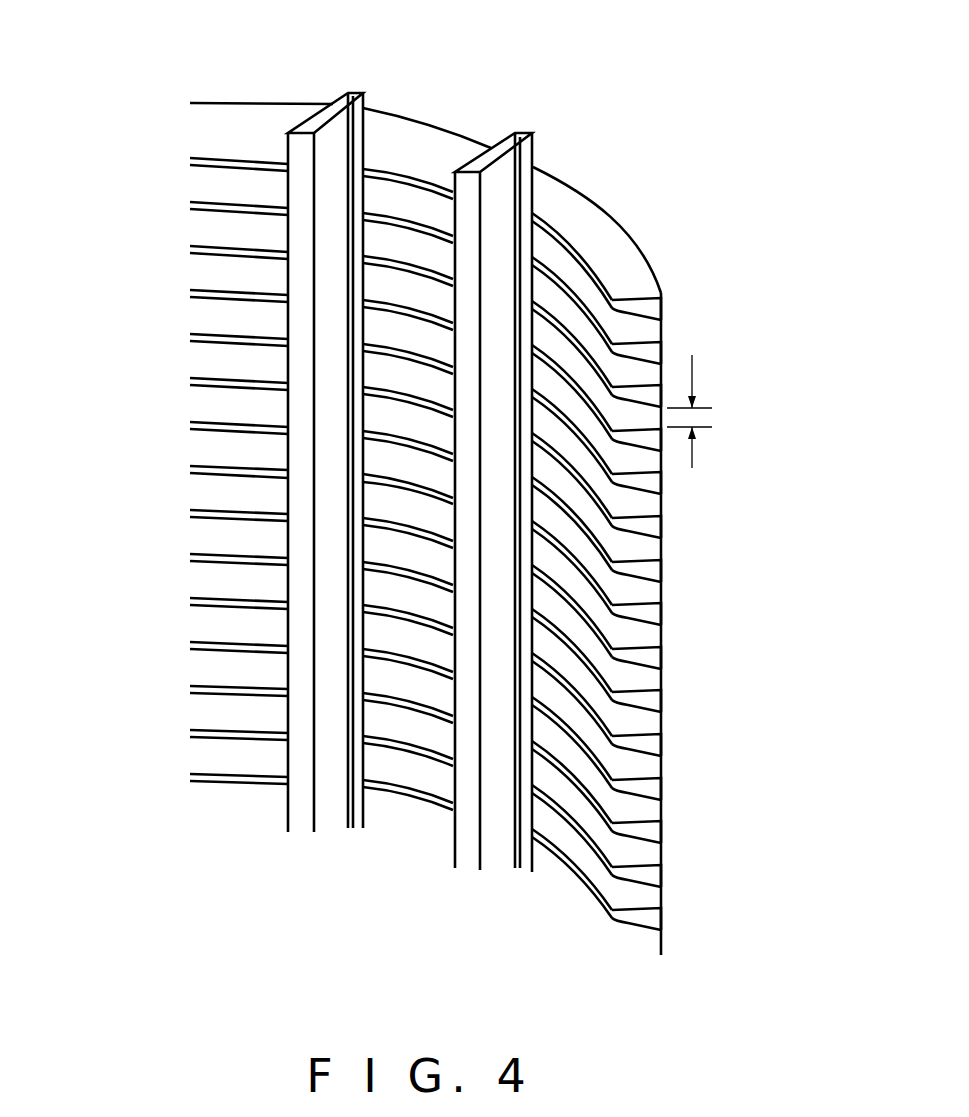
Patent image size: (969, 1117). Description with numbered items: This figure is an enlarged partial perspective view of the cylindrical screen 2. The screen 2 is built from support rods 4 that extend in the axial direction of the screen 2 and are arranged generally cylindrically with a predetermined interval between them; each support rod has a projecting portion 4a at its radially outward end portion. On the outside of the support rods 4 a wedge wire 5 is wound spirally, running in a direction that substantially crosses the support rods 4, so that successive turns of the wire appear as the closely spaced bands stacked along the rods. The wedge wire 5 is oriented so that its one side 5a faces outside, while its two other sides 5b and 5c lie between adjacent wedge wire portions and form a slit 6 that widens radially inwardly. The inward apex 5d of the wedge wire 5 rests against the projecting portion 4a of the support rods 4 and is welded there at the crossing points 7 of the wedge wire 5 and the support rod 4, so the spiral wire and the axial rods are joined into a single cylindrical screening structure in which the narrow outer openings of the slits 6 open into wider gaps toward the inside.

The cylindrical screen 2 is at (690, 152).
The support rods 4 is at (322, 792).
The projecting portion 4a is at (333, 105).
The wedge wire 5 is at (653, 572).
The one side of the wedge wire 5a is at (662, 660).
The side of the wedge wire 5b is at (638, 675).
The side of the wedge wire 5c is at (638, 642).
The inward apex 5d is at (602, 655).
The slit 6 is at (692, 420).
The crossing points 7 is at (533, 215).